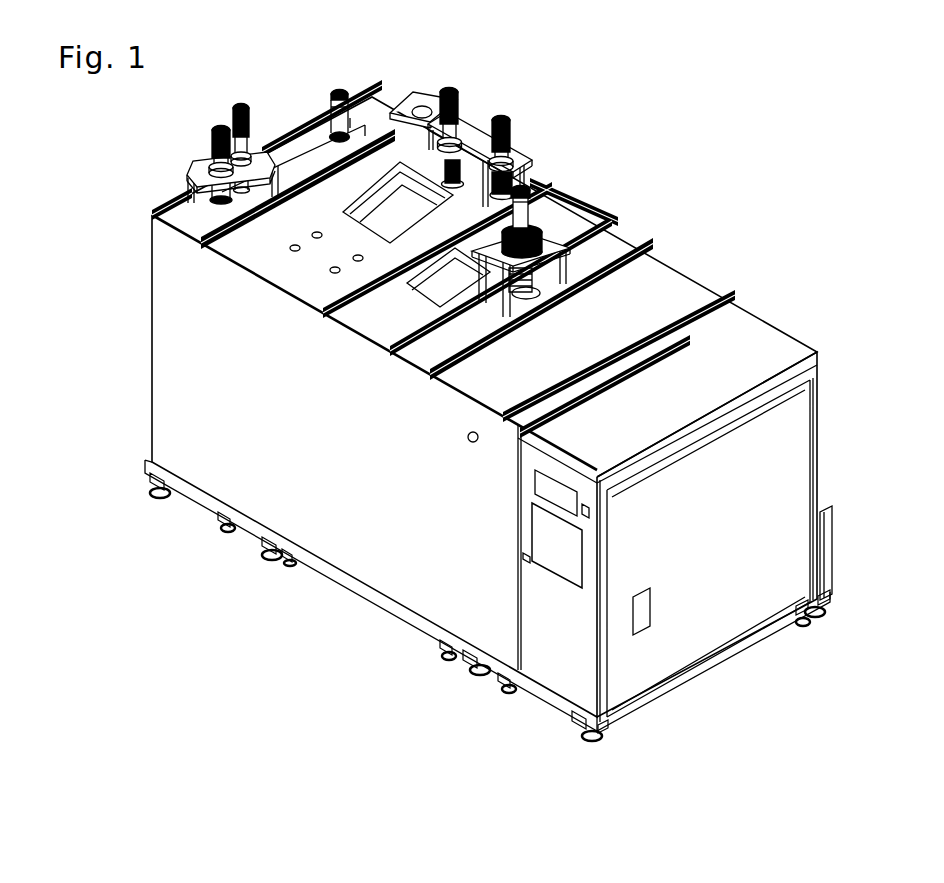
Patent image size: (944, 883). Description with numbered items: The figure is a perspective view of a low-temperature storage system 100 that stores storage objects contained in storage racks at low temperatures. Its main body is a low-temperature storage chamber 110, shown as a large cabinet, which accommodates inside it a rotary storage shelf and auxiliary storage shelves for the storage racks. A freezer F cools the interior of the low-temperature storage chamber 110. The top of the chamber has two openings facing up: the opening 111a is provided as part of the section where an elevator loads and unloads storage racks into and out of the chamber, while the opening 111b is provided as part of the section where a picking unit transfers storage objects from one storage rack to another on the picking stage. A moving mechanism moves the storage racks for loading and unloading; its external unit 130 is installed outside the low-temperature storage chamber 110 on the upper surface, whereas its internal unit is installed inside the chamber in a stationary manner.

The low-temperature storage system 100 is at (453, 393).
The low-temperature storage chamber 110 is at (297, 475).
The opening 111a is at (425, 92).
The opening 111b is at (393, 193).
The external unit 130 is at (245, 106).
The freezer F is at (570, 632).